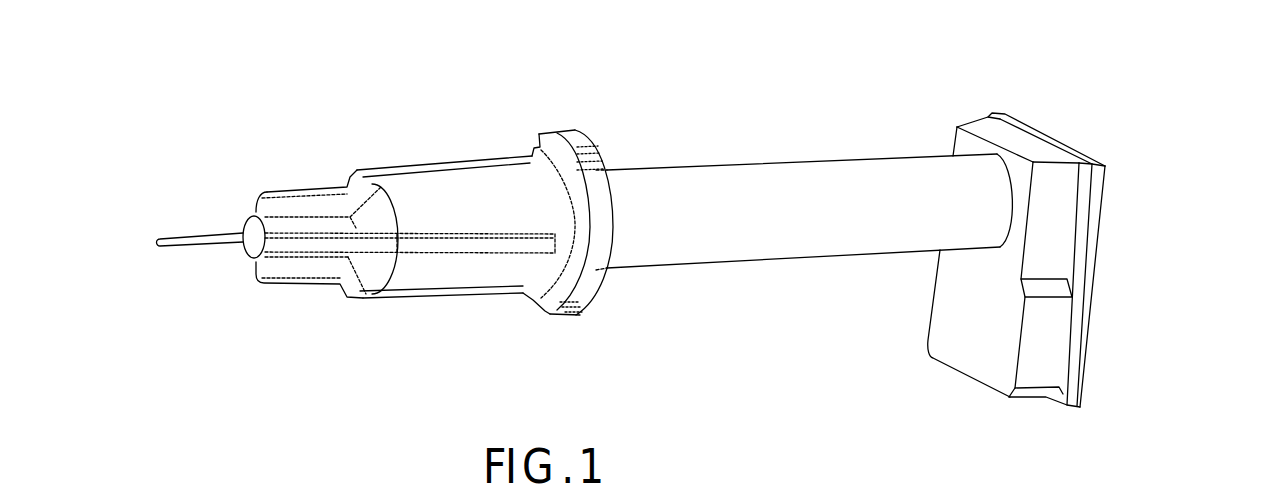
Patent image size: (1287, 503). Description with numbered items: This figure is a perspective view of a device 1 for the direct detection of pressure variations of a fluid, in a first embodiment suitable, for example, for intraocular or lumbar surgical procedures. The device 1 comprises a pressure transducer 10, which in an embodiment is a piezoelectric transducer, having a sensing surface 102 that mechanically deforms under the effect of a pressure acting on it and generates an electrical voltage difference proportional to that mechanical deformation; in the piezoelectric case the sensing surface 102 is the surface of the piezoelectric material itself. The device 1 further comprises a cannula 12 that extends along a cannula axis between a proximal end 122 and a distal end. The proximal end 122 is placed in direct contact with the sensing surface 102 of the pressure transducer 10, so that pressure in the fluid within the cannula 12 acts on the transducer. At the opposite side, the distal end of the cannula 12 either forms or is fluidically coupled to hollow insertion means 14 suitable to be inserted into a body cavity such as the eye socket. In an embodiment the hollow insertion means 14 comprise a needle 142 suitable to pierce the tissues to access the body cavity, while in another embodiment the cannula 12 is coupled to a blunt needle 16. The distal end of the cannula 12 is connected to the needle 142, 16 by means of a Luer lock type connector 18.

The device for the direct detection of pressure variations of a fluid 1 is at (1205, 103).
The pressure transducer 10 is at (1090, 340).
The sensing surface 102 is at (973, 324).
The proximal end 122 is at (990, 153).
The cannula 12 is at (752, 158).
The Luer lock type connector 18 is at (462, 315).
The hollow insertion means 14 is at (181, 198).
The needle 142 is at (194, 236).
The blunt needle 16 is at (208, 252).